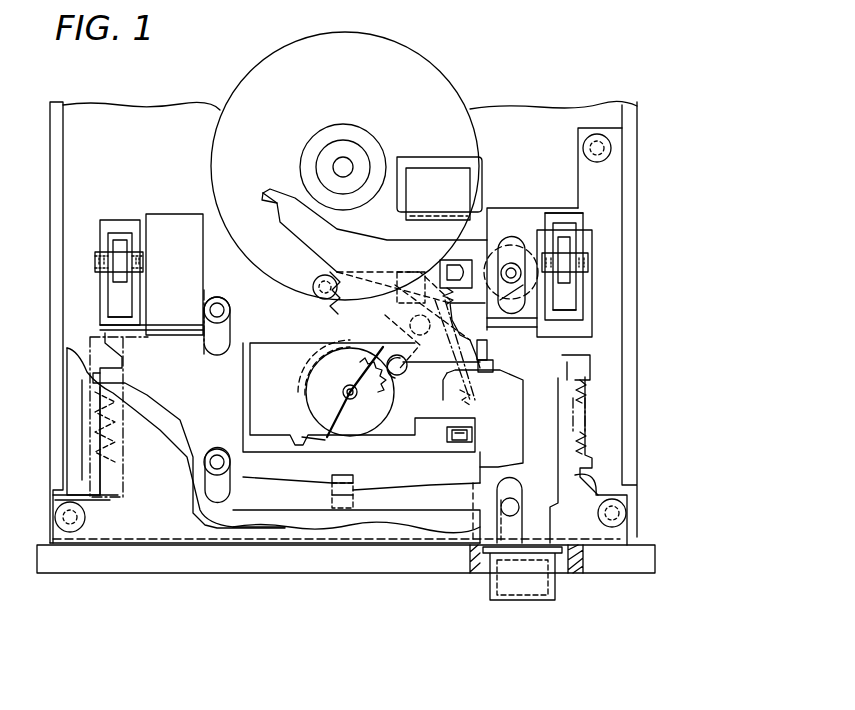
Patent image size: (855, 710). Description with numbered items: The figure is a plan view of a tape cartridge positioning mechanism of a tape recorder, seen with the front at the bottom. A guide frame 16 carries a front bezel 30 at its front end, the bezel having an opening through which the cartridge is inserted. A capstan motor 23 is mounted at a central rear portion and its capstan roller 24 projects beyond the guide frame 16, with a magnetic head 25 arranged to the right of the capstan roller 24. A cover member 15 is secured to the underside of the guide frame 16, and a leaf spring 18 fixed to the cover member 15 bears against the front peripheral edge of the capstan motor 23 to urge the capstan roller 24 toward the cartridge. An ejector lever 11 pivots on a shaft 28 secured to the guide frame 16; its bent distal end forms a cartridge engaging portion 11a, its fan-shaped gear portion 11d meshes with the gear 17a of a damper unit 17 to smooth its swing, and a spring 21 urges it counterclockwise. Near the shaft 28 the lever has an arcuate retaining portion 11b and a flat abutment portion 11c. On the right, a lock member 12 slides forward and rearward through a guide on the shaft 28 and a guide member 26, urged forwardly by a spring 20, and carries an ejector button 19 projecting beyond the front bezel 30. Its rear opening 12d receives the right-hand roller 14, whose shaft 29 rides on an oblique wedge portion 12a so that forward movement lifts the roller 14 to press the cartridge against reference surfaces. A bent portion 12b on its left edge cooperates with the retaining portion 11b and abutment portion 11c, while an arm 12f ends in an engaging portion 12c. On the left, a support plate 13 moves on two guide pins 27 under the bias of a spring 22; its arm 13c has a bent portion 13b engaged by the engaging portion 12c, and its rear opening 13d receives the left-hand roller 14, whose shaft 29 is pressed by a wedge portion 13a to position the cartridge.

The ejector lever 11 is at (404, 279).
The cartridge engaging portion 11a is at (285, 192).
The retaining portion 11b is at (482, 340).
The abutment portion 11c is at (493, 362).
The fan-shaped gear portion 11d is at (333, 320).
The lock member 12 is at (415, 483).
The wedge portion 12a is at (578, 243).
The bent portion 12b is at (474, 386).
The engaging portion 12c is at (335, 510).
The opening 12d is at (572, 298).
The arm 12f is at (414, 515).
The support plate 13 is at (273, 472).
The wedge portion 13a is at (110, 290).
The bent portion 13b is at (345, 475).
The arm 13c is at (270, 510).
The opening 13d is at (118, 312).
The roller 14 is at (120, 240).
The cover member 15 is at (252, 340).
The guide frame 16 is at (100, 522).
The damper unit 17 is at (262, 380).
The gear 17a is at (380, 427).
The leaf spring 18 is at (318, 280).
The ejector button 19 is at (540, 600).
The spring 20 is at (585, 442).
The spring 21 is at (470, 395).
The spring 22 is at (95, 400).
The capstan motor 23 is at (417, 55).
The capstan roller 24 is at (358, 135).
The magnetic head 25 is at (465, 182).
The guide member 26 is at (505, 492).
The guide pins 27 is at (217, 305).
The shaft 28 is at (512, 262).
The shaft 29 is at (95, 262).
The front bezel 30 is at (120, 562).